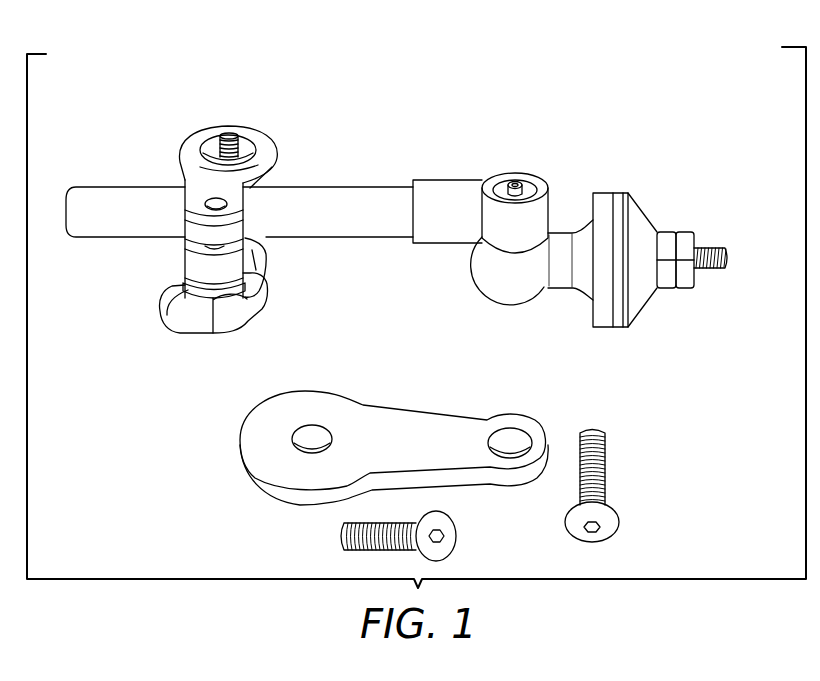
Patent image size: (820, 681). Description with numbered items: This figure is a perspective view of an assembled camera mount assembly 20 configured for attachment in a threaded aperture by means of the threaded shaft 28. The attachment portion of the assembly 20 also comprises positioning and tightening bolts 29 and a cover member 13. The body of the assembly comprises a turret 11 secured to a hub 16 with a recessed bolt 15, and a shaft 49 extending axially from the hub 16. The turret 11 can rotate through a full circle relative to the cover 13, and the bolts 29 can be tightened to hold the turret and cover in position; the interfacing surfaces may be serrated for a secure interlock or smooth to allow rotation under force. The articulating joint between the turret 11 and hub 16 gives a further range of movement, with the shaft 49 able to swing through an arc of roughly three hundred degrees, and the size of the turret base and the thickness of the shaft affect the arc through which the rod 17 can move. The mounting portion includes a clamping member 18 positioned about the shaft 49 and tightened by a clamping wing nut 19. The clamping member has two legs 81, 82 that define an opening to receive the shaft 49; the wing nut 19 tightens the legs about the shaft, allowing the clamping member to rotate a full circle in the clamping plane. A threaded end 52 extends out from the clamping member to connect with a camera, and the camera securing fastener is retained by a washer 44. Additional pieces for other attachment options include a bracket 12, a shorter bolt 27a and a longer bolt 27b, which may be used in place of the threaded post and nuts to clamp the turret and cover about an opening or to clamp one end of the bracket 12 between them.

The camera mount assembly 20 is at (543, 116).
The clamping member 18 is at (309, 141).
The washer 44 is at (248, 150).
The threaded end 52 is at (227, 133).
The leg 81 is at (188, 222).
The leg 82 is at (188, 263).
The clamping wing nut 19 is at (161, 339).
The shaft 49 is at (340, 238).
The rod 17 is at (368, 174).
The hub 16 is at (514, 178).
The recessed bolt 15 is at (518, 181).
The turret 11 is at (559, 299).
The cover member 13 is at (645, 294).
The positioning and tightening bolts 29 is at (678, 233).
The threaded shaft 28 is at (714, 245).
The bracket 12 is at (407, 387).
The shorter bolt 27a is at (457, 536).
The longer bolt 27b is at (618, 521).